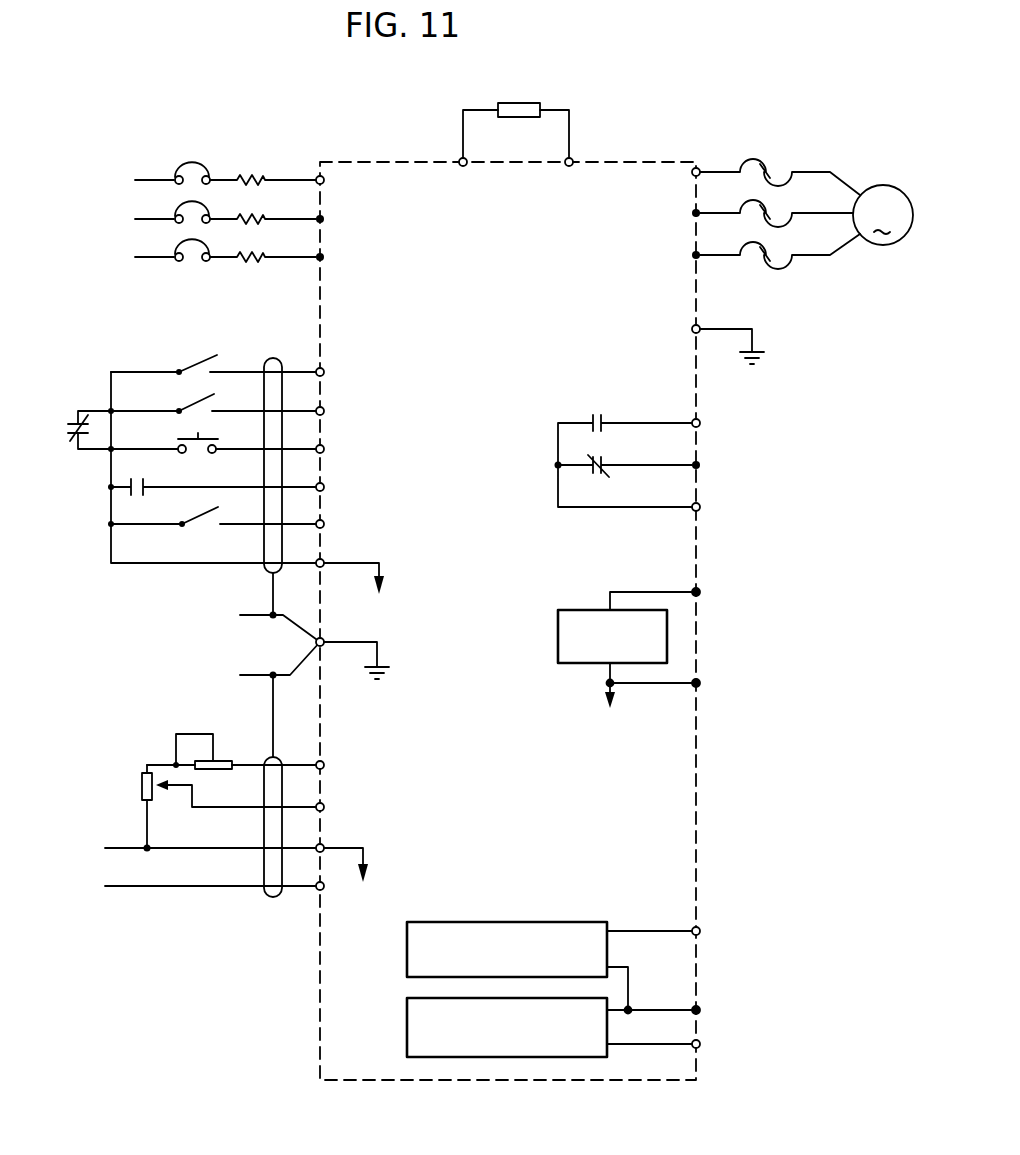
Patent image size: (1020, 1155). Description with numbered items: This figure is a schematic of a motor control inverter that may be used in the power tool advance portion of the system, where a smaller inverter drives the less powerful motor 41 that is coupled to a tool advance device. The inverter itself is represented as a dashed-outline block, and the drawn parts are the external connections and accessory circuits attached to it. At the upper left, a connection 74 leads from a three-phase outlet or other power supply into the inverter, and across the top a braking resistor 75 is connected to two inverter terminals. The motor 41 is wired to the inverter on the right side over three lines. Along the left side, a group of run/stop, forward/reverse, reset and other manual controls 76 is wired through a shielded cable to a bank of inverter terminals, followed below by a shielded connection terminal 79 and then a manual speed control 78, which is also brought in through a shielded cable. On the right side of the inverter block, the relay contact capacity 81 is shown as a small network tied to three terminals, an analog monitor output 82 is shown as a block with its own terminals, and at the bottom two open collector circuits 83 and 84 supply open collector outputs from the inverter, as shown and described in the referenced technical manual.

The motor 41 is at (802, 214).
The connection 74 is at (148, 229).
The braking resistor 75 is at (531, 90).
The manual controls 76 is at (135, 463).
The manual speed control 78 is at (95, 840).
The shielded connection terminal 79 is at (266, 647).
The relay contact capacity 81 is at (645, 504).
The analog monitor output 82 is at (616, 656).
The open collector circuit 83 is at (518, 965).
The open collector circuit 84 is at (512, 1043).